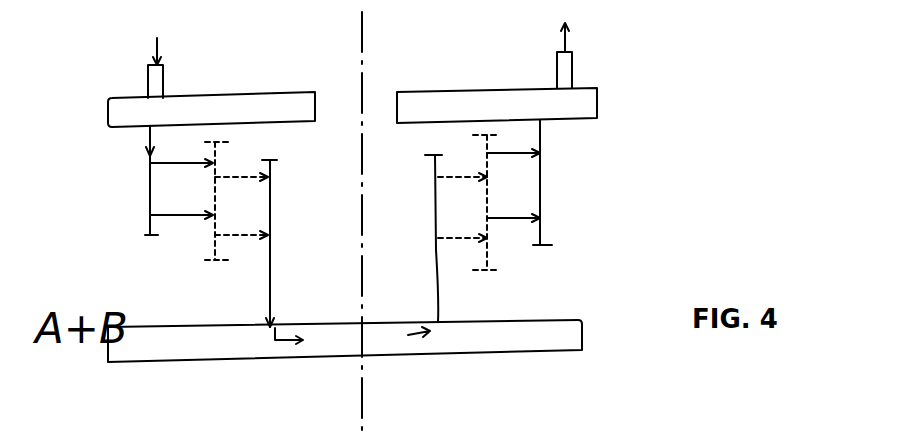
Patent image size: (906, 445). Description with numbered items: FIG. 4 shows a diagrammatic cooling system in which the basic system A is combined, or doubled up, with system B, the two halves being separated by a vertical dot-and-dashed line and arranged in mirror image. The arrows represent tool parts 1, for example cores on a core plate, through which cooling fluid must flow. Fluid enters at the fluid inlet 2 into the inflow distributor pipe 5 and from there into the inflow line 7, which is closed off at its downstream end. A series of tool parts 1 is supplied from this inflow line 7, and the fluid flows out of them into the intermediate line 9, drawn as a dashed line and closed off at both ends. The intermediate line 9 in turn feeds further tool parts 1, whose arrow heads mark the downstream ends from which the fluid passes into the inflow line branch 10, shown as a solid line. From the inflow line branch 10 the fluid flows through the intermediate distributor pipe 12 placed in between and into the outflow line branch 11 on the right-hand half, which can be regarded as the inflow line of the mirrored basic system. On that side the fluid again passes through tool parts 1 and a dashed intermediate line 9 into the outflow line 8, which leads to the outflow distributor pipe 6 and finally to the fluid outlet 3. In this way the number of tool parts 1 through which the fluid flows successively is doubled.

The tool part 1 is at (183, 217).
The fluid inlet 2 is at (157, 48).
The fluid outlet 3 is at (568, 42).
The inflow distributor pipe 5 is at (118, 110).
The outflow distributor pipe 6 is at (578, 108).
The inflow line 7 is at (150, 180).
The outflow line 8 is at (540, 183).
The intermediate line 9 is at (218, 150).
The inflow line branch 10 is at (275, 262).
The outflow line branch 11 is at (430, 255).
The intermediate distributor pipe 12 is at (545, 332).